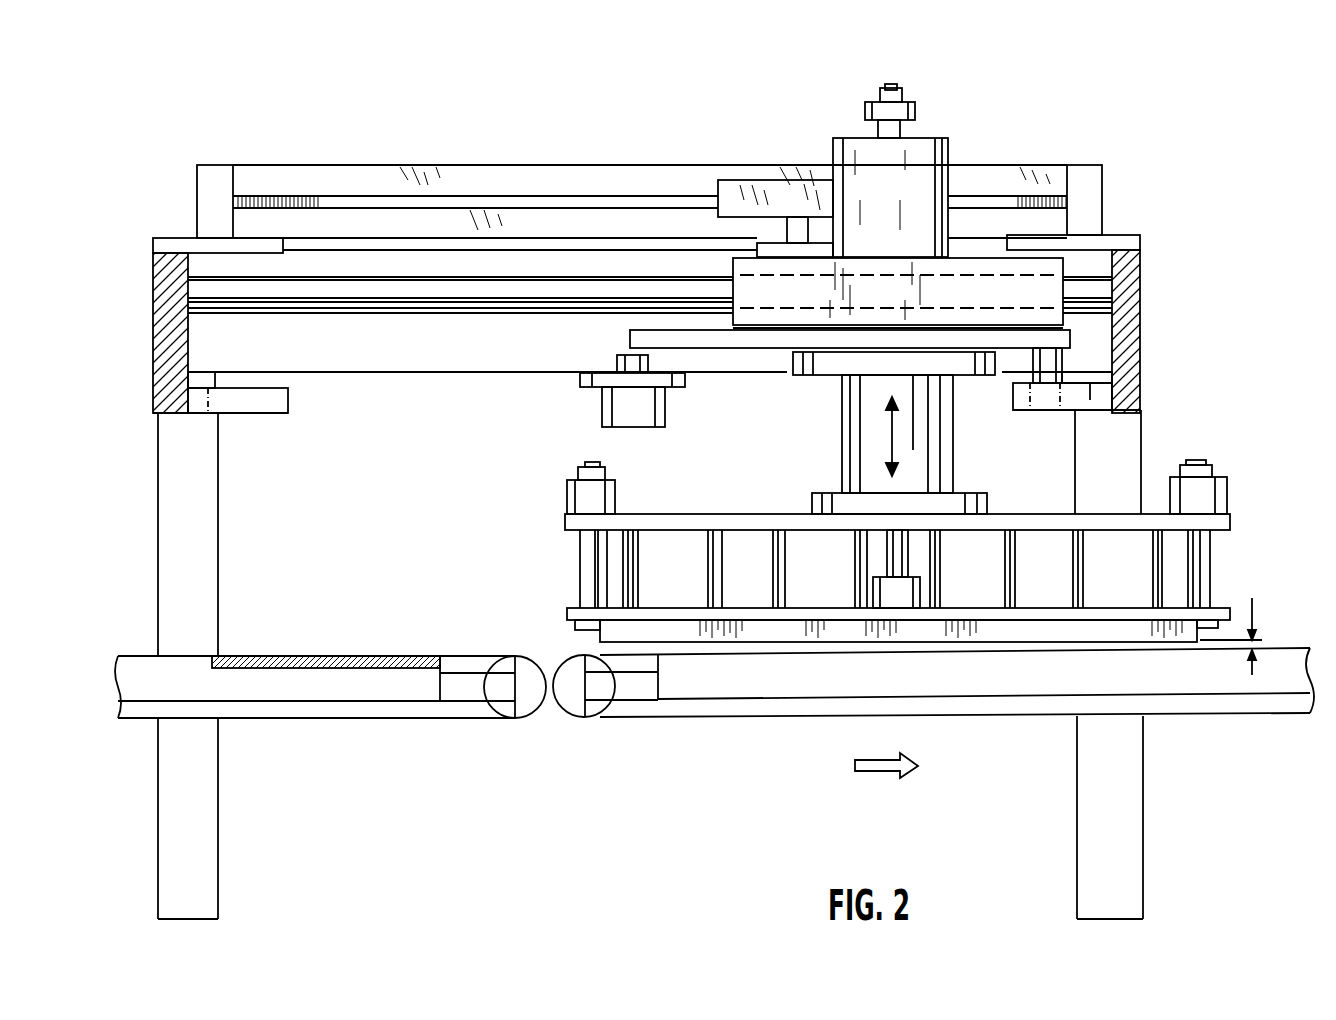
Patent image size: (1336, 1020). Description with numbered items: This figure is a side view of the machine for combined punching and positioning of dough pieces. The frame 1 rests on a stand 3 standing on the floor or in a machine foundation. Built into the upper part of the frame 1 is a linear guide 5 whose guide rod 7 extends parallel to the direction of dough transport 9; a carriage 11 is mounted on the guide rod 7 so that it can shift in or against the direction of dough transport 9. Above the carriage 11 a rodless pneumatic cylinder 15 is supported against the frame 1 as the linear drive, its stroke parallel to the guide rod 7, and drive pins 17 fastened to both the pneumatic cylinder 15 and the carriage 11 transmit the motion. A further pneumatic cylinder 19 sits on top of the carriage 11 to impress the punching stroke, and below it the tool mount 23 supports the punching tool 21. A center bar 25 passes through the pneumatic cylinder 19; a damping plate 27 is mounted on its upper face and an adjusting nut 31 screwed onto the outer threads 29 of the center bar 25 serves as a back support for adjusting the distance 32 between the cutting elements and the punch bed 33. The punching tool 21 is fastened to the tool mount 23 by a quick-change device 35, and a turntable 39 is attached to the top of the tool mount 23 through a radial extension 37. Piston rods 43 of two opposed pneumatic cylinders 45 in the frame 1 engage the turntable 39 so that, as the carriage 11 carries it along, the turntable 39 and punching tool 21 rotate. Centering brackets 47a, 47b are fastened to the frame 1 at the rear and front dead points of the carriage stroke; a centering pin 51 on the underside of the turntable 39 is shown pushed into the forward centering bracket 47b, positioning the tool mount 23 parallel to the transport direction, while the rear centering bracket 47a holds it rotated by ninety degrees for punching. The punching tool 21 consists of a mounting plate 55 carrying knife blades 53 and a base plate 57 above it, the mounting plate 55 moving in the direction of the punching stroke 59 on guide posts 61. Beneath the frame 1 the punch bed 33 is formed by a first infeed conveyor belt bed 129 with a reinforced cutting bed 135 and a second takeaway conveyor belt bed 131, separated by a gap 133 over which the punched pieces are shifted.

The frame 1 is at (1128, 280).
The stand 3 is at (1145, 790).
The linear guide 5 is at (720, 263).
The guide rod 7 is at (438, 300).
The direction of dough transport 9 is at (880, 768).
The carriage 11 is at (1028, 288).
The pneumatic cylinder 15 is at (1030, 157).
The drive pins 17 is at (793, 222).
The pneumatic cylinder 19 is at (950, 150).
The punching tool 21 is at (1235, 572).
The tool mount 23 is at (943, 443).
The center bar 25 is at (882, 130).
The damping plate 27 is at (868, 108).
The outer threads 29 is at (892, 86).
The adjusting nut 31 is at (902, 98).
The distance 32 is at (1260, 642).
The punch bed 33 is at (714, 712).
The quick-change device 35 is at (832, 497).
The radial extension 37 is at (820, 368).
The turntable 39 is at (1080, 340).
The piston rods 43 is at (618, 363).
The pneumatic cylinders 45 is at (598, 402).
The centering bracket 47a is at (278, 408).
The centering bracket 47b is at (1100, 398).
The centering pin 51 is at (1045, 378).
The knife blades 53 is at (1002, 633).
The mounting plate 55 is at (950, 613).
The base plate 57 is at (714, 518).
The punching stroke 59 is at (890, 418).
The guide posts 61 is at (585, 546).
The first infeed conveyor belt bed 129 is at (333, 715).
The second takeaway conveyor belt bed 131 is at (810, 700).
The gap 133 is at (556, 722).
The reinforced cutting bed 135 is at (372, 655).